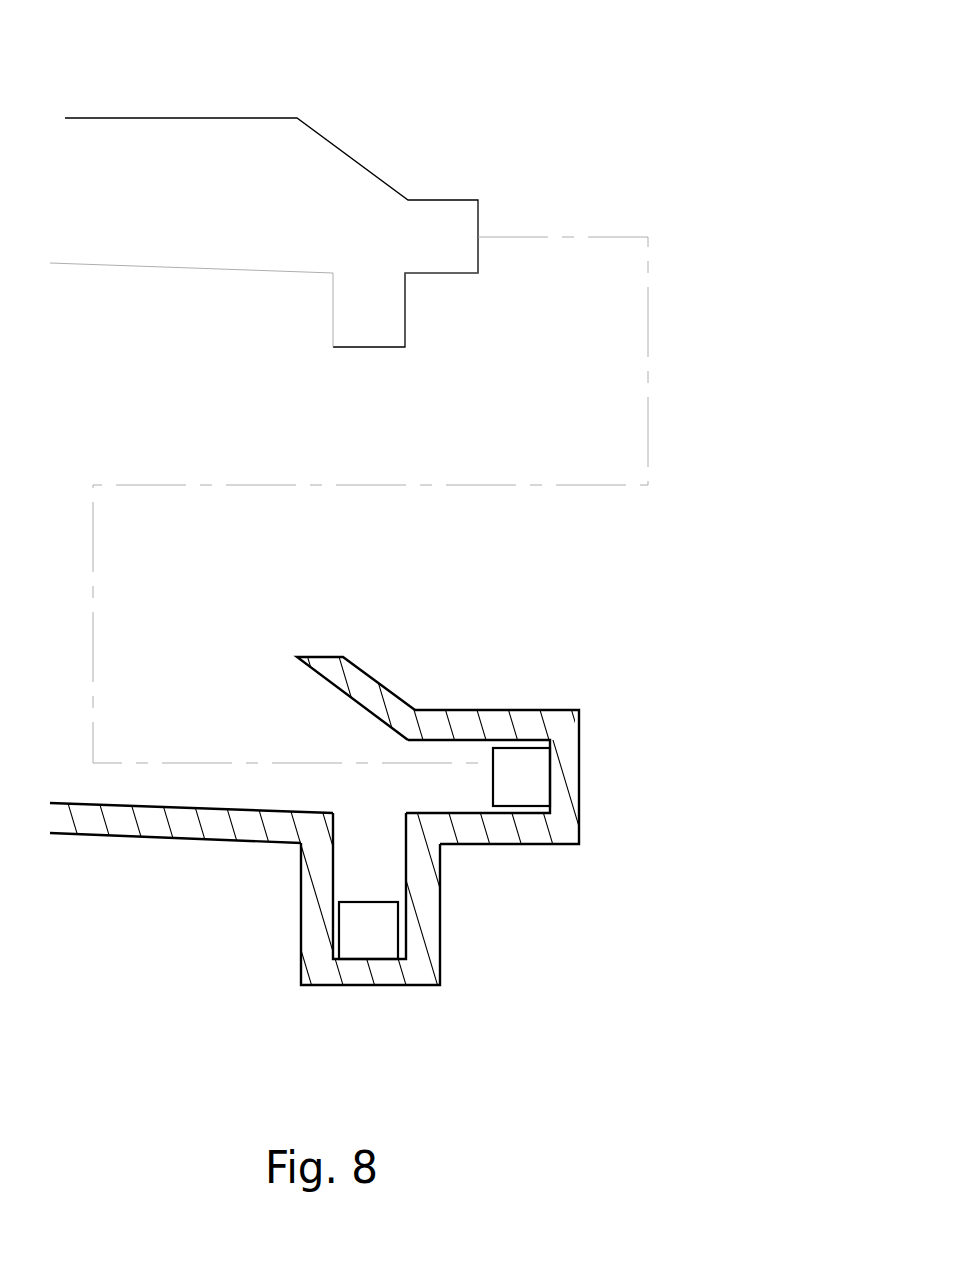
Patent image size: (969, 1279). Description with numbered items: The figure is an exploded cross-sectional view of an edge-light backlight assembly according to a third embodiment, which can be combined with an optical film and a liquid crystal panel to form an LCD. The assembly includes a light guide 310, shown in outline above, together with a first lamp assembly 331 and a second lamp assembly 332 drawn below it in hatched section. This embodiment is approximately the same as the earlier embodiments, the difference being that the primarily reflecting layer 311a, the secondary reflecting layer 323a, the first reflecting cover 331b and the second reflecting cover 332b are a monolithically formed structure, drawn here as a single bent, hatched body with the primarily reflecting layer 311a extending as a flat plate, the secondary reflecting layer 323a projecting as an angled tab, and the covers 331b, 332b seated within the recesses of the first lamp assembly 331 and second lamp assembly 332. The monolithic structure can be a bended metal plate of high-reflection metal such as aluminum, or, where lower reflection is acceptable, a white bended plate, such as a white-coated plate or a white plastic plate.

The light guide 310 is at (161, 145).
The primarily reflecting layer 311a is at (227, 843).
The secondary reflecting layer 323a is at (375, 677).
The first lamp assembly 331 is at (590, 667).
The first reflecting cover 331b is at (582, 800).
The second lamp assembly 332 is at (371, 999).
The second reflecting cover 332b is at (415, 987).